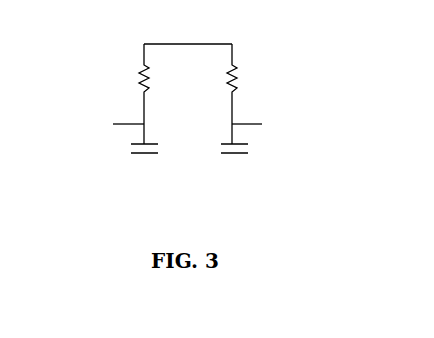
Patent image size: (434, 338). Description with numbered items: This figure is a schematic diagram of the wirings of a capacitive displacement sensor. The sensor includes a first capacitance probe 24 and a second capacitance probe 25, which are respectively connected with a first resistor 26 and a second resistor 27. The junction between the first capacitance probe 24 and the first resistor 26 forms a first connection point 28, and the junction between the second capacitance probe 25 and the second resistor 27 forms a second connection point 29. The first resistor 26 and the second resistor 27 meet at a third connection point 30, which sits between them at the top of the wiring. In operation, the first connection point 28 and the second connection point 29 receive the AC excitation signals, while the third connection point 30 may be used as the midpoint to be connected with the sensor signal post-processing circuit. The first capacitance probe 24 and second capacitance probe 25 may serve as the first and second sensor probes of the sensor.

The third connection point 30 is at (187, 44).
The first resistor 26 is at (131, 80).
The second resistor 27 is at (240, 87).
The first connection point 28 is at (110, 125).
The second connection point 29 is at (263, 125).
The first capacitance probe 24 is at (142, 163).
The second capacitance probe 25 is at (238, 163).